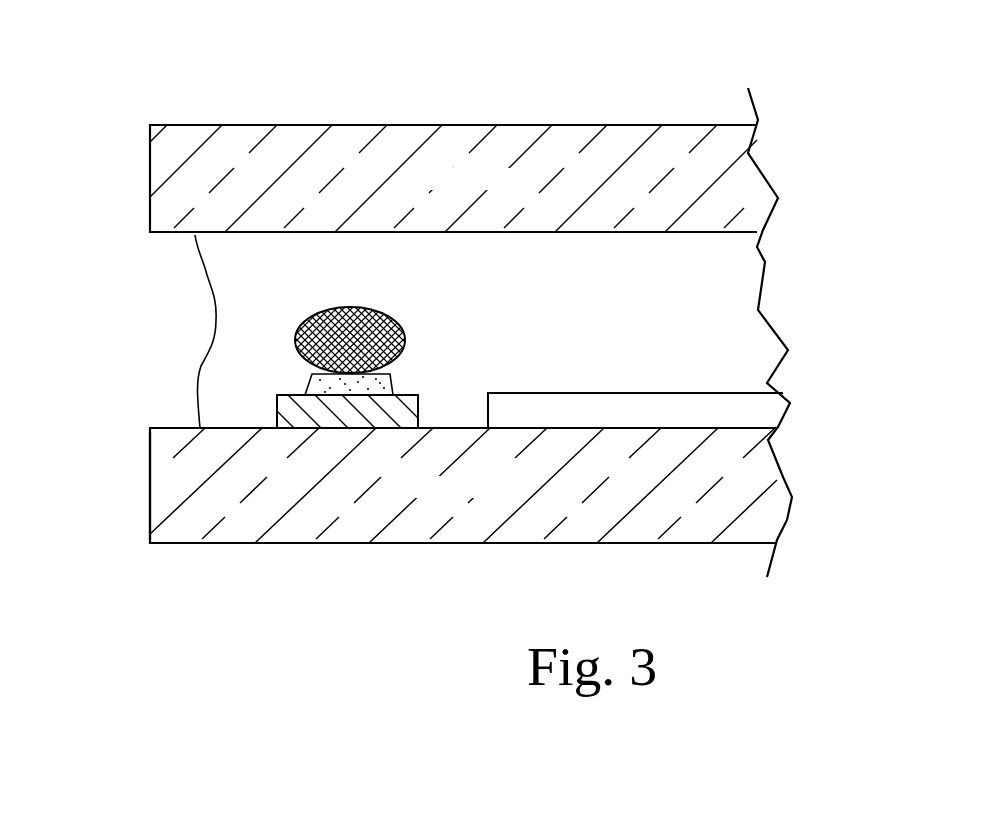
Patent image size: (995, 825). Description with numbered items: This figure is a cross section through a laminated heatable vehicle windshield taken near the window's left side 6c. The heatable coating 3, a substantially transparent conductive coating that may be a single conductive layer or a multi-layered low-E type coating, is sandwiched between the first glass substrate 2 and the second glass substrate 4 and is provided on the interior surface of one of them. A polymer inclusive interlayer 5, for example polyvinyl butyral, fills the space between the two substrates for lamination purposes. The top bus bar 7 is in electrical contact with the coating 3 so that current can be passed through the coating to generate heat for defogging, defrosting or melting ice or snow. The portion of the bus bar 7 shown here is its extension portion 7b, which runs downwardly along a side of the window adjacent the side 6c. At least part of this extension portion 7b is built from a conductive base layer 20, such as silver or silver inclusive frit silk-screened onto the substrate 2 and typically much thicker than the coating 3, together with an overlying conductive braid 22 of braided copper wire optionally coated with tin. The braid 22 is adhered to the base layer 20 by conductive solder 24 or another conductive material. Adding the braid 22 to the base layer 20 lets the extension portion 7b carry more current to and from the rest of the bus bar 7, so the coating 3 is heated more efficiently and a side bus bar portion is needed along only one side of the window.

The first glass substrate 2 is at (370, 527).
The heatable coating 3 is at (648, 398).
The second glass substrate 4 is at (523, 133).
The polymer inclusive interlayer 5 is at (257, 268).
The left side 6c is at (150, 488).
The top bus bar 7 is at (437, 303).
The extension portion of bus bar 7b is at (415, 320).
The conductive base layer 20 is at (290, 408).
The conductive braid 22 is at (350, 318).
The conductive solder 24 is at (323, 388).